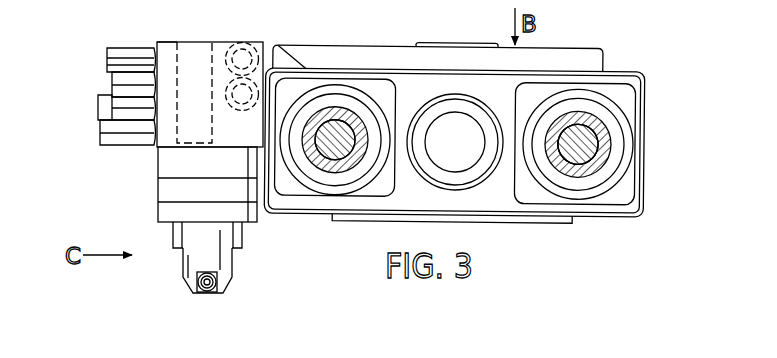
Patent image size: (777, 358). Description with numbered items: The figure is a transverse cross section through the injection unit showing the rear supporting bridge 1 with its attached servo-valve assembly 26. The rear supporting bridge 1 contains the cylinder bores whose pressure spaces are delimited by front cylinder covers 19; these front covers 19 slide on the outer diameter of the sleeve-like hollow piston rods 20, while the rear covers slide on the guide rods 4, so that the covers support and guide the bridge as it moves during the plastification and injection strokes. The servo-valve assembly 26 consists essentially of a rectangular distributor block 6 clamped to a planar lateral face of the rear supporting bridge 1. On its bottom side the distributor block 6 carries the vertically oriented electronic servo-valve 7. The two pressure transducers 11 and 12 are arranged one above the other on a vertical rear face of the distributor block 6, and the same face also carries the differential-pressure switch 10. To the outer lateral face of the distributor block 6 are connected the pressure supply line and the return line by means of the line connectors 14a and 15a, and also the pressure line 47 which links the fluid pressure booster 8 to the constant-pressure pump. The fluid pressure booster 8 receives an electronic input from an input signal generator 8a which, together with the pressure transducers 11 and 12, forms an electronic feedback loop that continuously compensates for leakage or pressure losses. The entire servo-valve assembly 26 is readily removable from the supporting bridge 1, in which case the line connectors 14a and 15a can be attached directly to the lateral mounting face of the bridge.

The rear supporting bridge 1 is at (605, 58).
The guide rods 4 is at (328, 153).
The distributor block 6 is at (217, 238).
The electronic servo-valve 7 is at (178, 165).
The fluid pressure booster 8 is at (197, 258).
The input signal generator 8a is at (203, 292).
The differential-pressure switch 10 is at (187, 70).
The pressure transducer 11 is at (240, 52).
The pressure transducer 12 is at (245, 90).
The line connector 14a is at (118, 131).
The line connector 15a is at (125, 90).
The front cylinder cover 19 is at (592, 180).
The hollow piston rod 20 is at (597, 167).
The servo-valve assembly 26 is at (150, 42).
The pressure line 47 is at (115, 60).